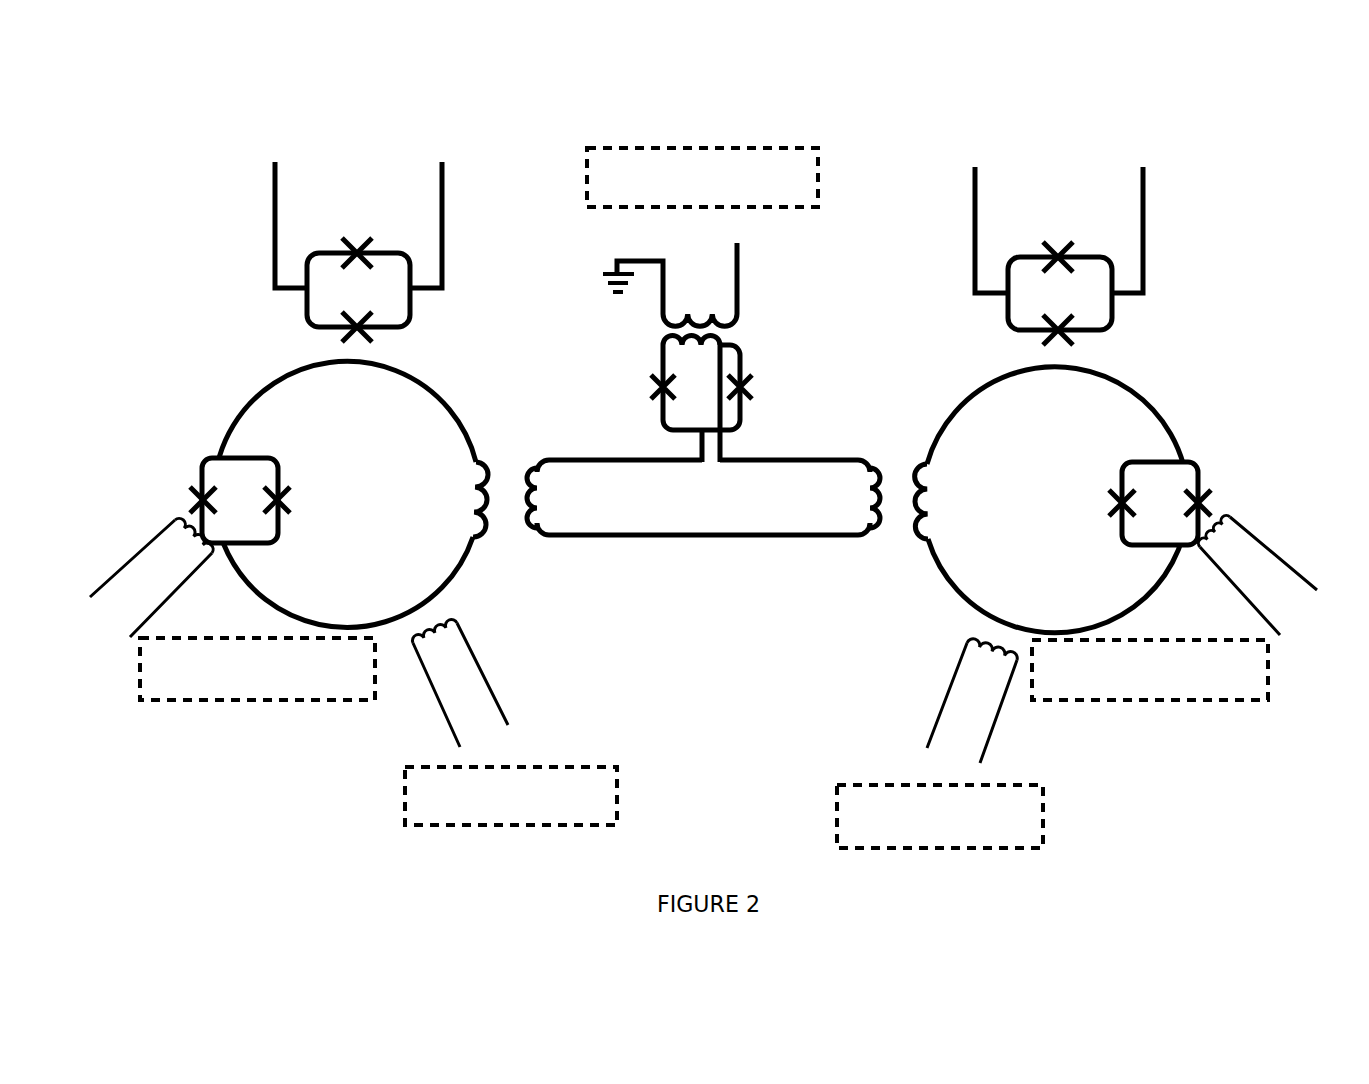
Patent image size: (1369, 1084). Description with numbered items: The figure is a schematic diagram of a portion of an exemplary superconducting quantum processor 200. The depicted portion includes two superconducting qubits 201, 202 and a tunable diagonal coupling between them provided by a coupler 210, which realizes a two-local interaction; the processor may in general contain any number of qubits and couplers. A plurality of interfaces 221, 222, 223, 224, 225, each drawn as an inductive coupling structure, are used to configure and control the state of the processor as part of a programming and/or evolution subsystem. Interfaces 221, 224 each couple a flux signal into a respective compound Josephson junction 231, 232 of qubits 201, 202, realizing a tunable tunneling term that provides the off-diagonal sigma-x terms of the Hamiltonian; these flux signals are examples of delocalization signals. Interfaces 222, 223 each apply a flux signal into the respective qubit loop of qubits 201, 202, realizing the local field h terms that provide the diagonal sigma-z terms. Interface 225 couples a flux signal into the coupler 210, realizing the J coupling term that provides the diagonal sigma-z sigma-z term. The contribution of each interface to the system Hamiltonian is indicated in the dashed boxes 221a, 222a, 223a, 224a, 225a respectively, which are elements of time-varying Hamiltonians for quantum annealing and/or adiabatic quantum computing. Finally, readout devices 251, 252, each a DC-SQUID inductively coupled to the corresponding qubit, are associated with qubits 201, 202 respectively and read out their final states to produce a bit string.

The superconducting quantum processor 200 is at (188, 203).
The superconducting qubit 201 is at (308, 452).
The superconducting qubit 202 is at (1088, 445).
The coupler 210 is at (597, 450).
The interface 221 is at (170, 515).
The box 221a is at (340, 705).
The interface 222 is at (442, 747).
The box 222a is at (533, 837).
The interface 223 is at (997, 758).
The box 223a is at (902, 853).
The interface 224 is at (1230, 513).
The box 224a is at (1085, 703).
The interface 225 is at (750, 242).
The box 225a is at (642, 145).
The compound Josephson junction 231 is at (287, 465).
The compound Josephson junction 232 is at (1122, 475).
The readout device 251 is at (388, 288).
The readout device 252 is at (1088, 282).